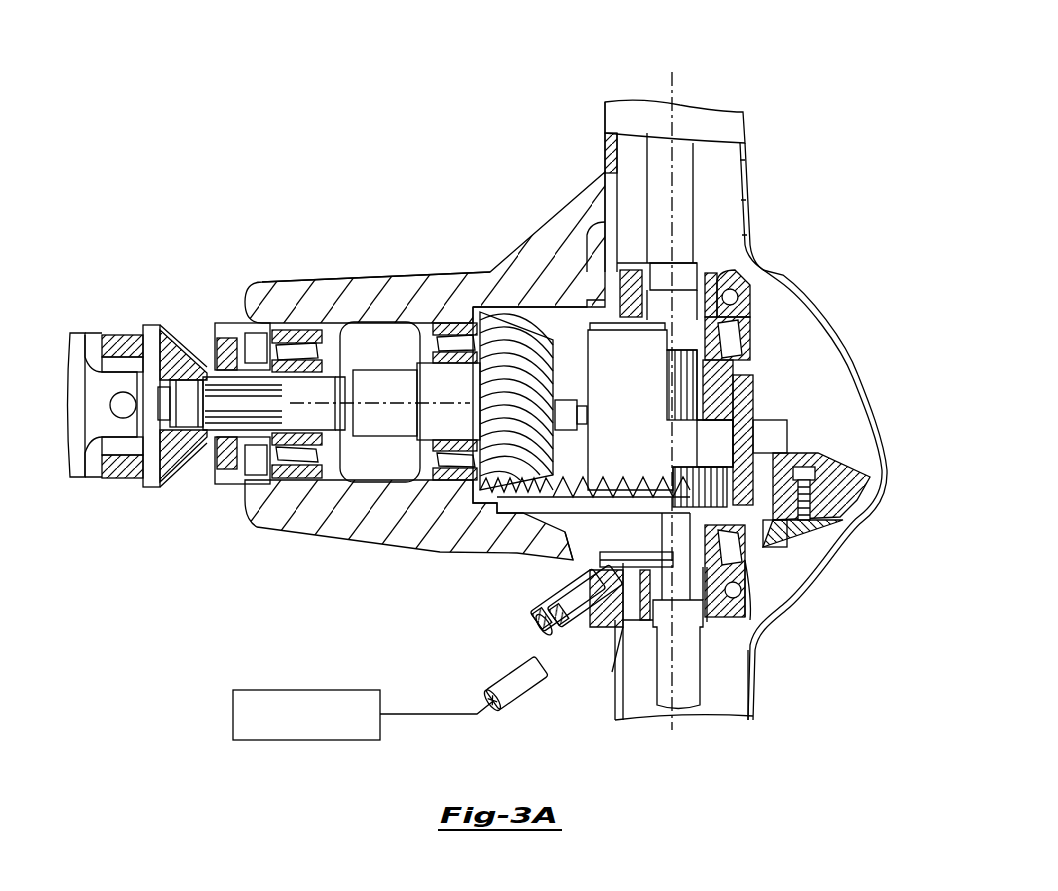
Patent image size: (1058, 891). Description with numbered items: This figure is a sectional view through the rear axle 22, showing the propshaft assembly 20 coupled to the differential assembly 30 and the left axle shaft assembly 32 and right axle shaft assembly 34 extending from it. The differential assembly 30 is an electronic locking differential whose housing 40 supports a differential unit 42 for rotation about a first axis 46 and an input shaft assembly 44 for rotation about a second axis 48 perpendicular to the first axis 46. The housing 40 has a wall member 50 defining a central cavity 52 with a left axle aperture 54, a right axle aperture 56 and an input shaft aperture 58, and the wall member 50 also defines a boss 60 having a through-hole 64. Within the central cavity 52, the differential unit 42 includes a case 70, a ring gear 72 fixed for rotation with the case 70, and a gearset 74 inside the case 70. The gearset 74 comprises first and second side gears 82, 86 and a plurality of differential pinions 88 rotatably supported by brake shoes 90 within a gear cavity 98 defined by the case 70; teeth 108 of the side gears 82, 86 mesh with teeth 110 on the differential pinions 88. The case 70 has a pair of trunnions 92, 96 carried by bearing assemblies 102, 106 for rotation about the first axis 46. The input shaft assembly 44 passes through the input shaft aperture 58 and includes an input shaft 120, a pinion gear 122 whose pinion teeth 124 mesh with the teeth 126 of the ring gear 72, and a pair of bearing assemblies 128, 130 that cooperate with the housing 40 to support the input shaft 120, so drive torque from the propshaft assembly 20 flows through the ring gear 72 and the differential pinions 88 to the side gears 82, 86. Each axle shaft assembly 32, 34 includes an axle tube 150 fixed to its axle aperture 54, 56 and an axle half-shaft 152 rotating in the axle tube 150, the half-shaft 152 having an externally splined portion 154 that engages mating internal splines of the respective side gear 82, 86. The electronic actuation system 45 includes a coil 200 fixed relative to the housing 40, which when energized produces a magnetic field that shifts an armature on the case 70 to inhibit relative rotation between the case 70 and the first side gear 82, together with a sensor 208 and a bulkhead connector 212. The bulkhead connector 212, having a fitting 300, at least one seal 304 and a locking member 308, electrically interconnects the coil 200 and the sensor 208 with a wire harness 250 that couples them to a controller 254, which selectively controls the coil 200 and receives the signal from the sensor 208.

The propshaft assembly 20 is at (93, 352).
The rear axle 22 is at (391, 164).
The differential assembly 30 is at (806, 236).
The left axle shaft assembly 32 is at (712, 693).
The right axle shaft assembly 34 is at (705, 184).
The housing 40 is at (390, 540).
The differential unit 42 is at (616, 366).
The input shaft assembly 44 is at (346, 420).
The electronic actuation system 45 is at (571, 562).
The first axis 46 is at (674, 98).
The second axis 48 is at (365, 408).
The wall member 50 is at (489, 287).
The central cavity 52 is at (843, 432).
The left axle aperture 54 is at (740, 652).
The right axle aperture 56 is at (733, 225).
The input shaft aperture 58 is at (373, 290).
The boss 60 is at (549, 601).
The through-hole 64 is at (590, 640).
The case 70 is at (650, 352).
The ring gear 72 is at (497, 503).
The gearset 74 is at (801, 415).
The first side gear 82 is at (698, 532).
The second side gear 86 is at (740, 381).
The differential pinions 88 is at (750, 413).
The brake shoes 90 is at (780, 436).
The trunnion 92 is at (733, 555).
The trunnion 96 is at (753, 338).
The gear cavity 98 is at (683, 440).
The bearing assembly 102 is at (748, 600).
The bearing assembly 106 is at (753, 310).
The teeth 108 is at (693, 488).
The teeth 110 is at (743, 475).
The input shaft 120 is at (446, 383).
The pinion gear 122 is at (548, 360).
The pinion teeth 124 is at (540, 362).
The teeth 126 is at (592, 450).
The bearing assembly 128 is at (447, 350).
The bearing assembly 130 is at (320, 287).
The axle tube 150 is at (407, 422).
The axle half-shaft 152 is at (688, 165).
The externally splined portion 154 is at (680, 268).
The coil 200 is at (632, 556).
The sensor 208 is at (625, 555).
The bulkhead connector 212 is at (543, 676).
The wire harness 250 is at (414, 712).
The controller 254 is at (233, 712).
The fitting 300 is at (570, 612).
The seal 304 is at (623, 590).
The locking member 308 is at (553, 602).